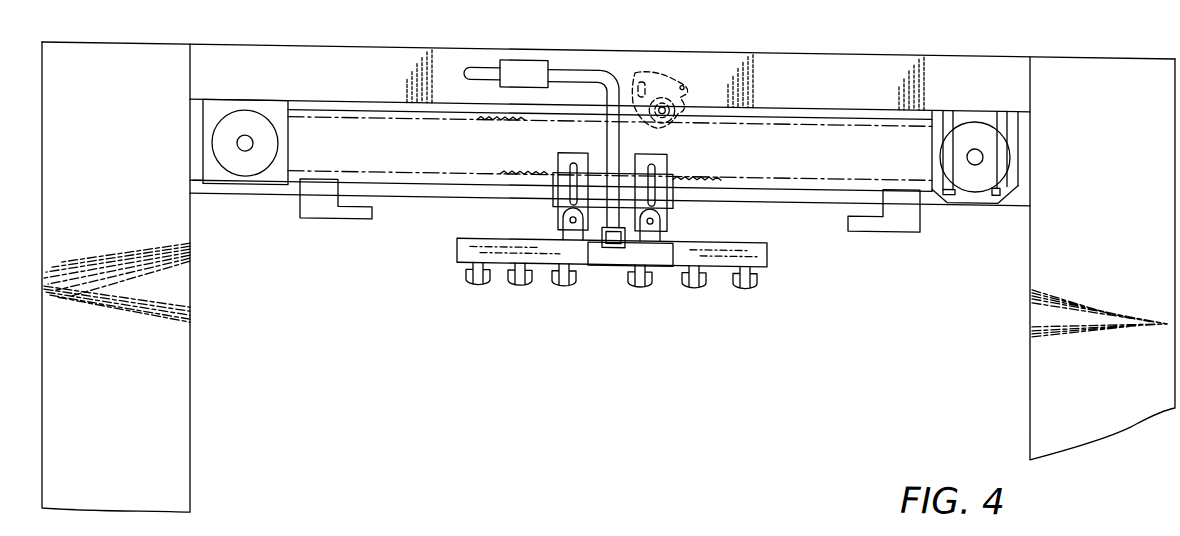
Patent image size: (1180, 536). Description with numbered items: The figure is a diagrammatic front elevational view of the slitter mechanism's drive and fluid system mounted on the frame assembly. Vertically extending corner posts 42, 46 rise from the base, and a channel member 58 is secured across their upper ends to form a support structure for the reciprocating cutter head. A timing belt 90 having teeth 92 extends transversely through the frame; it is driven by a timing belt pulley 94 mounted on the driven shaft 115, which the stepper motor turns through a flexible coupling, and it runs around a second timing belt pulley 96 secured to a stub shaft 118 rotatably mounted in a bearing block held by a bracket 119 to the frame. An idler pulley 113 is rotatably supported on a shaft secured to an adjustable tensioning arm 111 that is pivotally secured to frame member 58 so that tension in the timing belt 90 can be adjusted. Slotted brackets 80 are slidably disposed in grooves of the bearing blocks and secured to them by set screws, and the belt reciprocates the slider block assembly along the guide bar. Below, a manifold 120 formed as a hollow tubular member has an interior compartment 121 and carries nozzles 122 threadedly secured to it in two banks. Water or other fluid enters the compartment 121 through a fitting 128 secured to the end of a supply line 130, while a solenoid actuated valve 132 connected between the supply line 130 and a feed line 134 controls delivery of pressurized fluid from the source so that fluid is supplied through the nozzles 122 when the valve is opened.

The corner post 42 is at (167, 351).
The corner post 46 is at (1055, 347).
The channel member 58 is at (820, 55).
The bracket 80 is at (568, 144).
The timing belt 90 is at (408, 112).
The teeth 92 is at (718, 168).
The timing belt pulley 94 is at (223, 145).
The second timing belt pulley 96 is at (985, 164).
The adjustable tensioning arm 111 is at (655, 63).
The idler pulley 113 is at (662, 114).
The driven shaft 115 is at (253, 140).
The stub shaft 118 is at (967, 140).
The bracket 119 is at (1013, 124).
The manifold 120 is at (765, 247).
The interior compartment 121 is at (617, 249).
The nozzles 122 is at (478, 264).
The fitting 128 is at (560, 220).
The supply line 130 is at (577, 69).
The solenoid actuated valve 132 is at (523, 53).
The feed line 134 is at (490, 61).